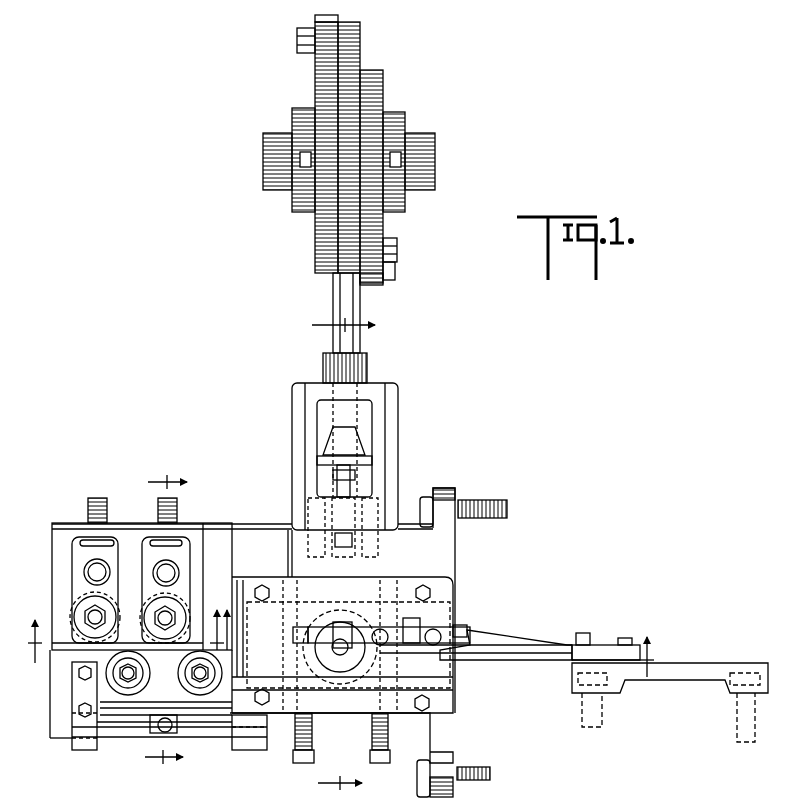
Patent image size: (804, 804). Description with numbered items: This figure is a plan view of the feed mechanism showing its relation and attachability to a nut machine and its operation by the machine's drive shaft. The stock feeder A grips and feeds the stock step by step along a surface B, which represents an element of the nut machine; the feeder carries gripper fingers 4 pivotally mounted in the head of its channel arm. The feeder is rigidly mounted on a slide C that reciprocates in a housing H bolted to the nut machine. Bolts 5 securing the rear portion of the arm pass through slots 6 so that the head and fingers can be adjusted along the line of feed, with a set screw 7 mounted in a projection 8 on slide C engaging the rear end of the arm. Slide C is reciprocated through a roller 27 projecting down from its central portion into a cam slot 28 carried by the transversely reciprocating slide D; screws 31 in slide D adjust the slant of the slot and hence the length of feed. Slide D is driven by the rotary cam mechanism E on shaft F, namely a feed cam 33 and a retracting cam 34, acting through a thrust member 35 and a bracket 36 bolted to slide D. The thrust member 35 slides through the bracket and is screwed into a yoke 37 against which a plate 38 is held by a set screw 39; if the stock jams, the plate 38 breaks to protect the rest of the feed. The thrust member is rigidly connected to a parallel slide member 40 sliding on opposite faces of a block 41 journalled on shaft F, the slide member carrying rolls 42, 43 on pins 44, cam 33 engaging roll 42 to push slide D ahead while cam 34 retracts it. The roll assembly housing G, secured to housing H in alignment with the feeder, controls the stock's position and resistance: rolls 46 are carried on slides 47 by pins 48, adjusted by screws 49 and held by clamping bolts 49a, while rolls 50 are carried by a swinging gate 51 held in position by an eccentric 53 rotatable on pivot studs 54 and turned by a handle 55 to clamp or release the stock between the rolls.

The bolts 5 is at (464, 608).
The slots 6 is at (455, 635).
The set screw 7 is at (343, 622).
The projection 8 is at (318, 628).
The roller 27 is at (330, 660).
The cam slot 28 is at (350, 665).
The screws 31 is at (372, 756).
The feed cam 33 is at (383, 98).
The retracting cam 34 is at (318, 82).
The thrust member 35 is at (333, 290).
The bracket 36 is at (398, 402).
The yoke 37 is at (365, 440).
The plate 38 is at (372, 462).
The set screw 39 is at (337, 480).
The parallel slide member 40 is at (360, 42).
The block 41 is at (345, 118).
The roll 42 is at (372, 283).
The roll 43 is at (315, 19).
The pins 44 is at (297, 44).
The rolls 46 is at (75, 610).
The slides 47 is at (88, 580).
The pins 48 is at (90, 618).
The screws 49 is at (90, 503).
The clamping bolts 49a is at (85, 560).
The rolls 50 is at (150, 680).
The gate 51 is at (158, 692).
The eccentric 53 is at (147, 735).
The pivot studs 54 is at (72, 735).
The handle 55 is at (173, 733).
The gripper fingers 4 is at (120, 640).
The stock feeder A is at (604, 640).
The surface B is at (685, 686).
The slide C is at (450, 668).
The slide D is at (298, 543).
The rotary cam mechanism E is at (386, 80).
The shaft F is at (437, 150).
The housing G is at (125, 514).
The housing H is at (247, 530).